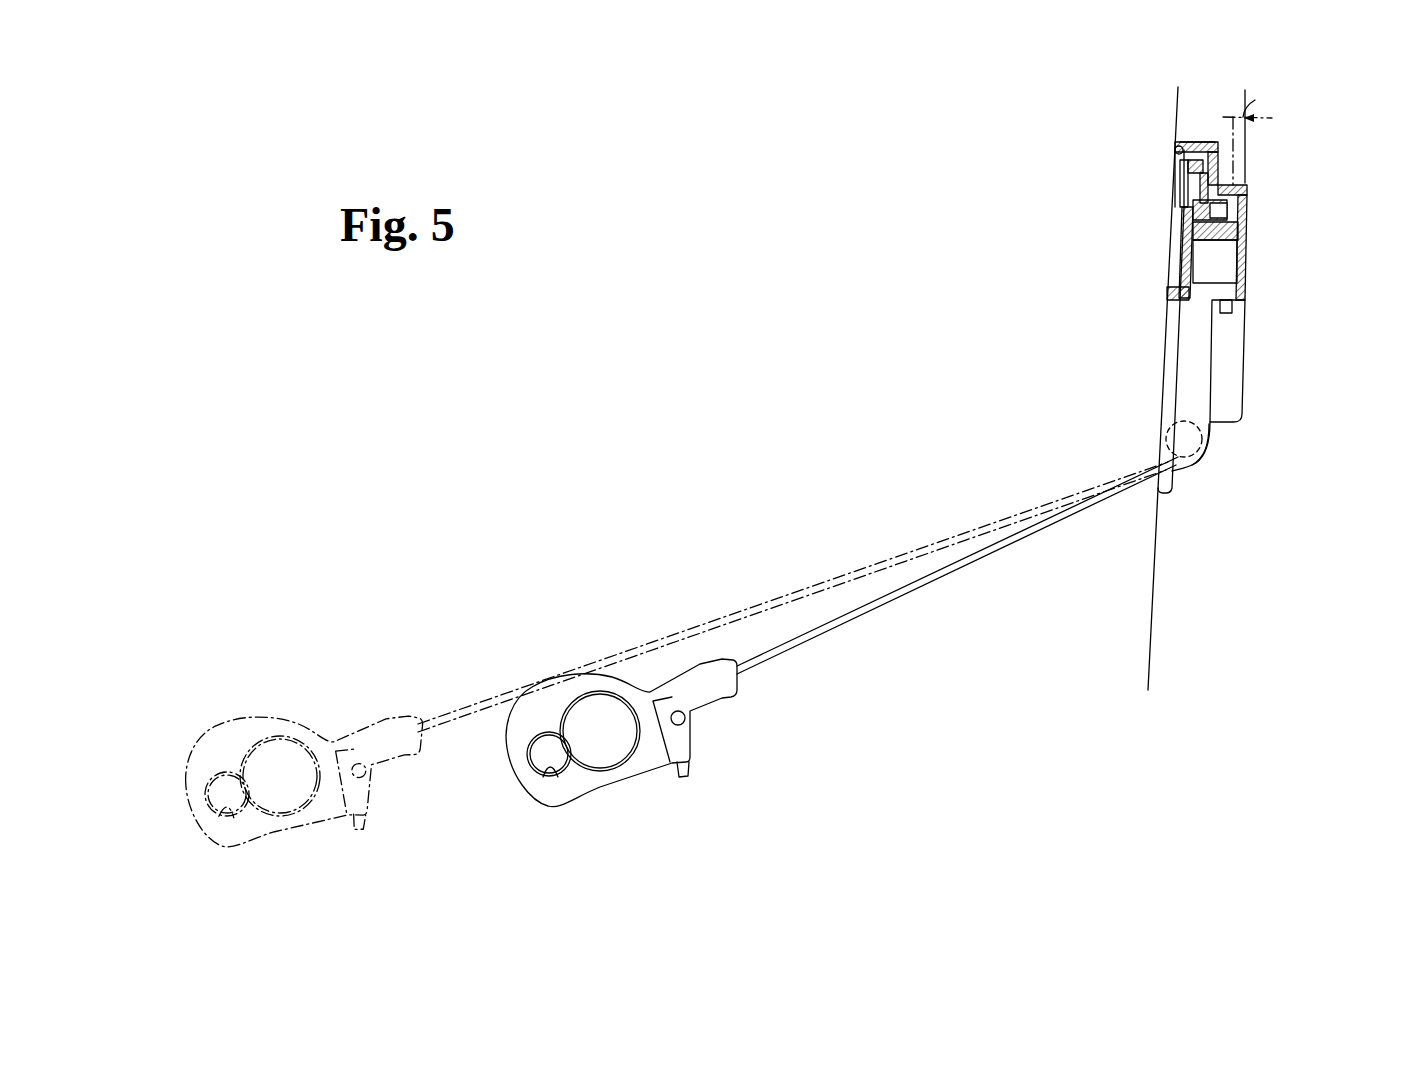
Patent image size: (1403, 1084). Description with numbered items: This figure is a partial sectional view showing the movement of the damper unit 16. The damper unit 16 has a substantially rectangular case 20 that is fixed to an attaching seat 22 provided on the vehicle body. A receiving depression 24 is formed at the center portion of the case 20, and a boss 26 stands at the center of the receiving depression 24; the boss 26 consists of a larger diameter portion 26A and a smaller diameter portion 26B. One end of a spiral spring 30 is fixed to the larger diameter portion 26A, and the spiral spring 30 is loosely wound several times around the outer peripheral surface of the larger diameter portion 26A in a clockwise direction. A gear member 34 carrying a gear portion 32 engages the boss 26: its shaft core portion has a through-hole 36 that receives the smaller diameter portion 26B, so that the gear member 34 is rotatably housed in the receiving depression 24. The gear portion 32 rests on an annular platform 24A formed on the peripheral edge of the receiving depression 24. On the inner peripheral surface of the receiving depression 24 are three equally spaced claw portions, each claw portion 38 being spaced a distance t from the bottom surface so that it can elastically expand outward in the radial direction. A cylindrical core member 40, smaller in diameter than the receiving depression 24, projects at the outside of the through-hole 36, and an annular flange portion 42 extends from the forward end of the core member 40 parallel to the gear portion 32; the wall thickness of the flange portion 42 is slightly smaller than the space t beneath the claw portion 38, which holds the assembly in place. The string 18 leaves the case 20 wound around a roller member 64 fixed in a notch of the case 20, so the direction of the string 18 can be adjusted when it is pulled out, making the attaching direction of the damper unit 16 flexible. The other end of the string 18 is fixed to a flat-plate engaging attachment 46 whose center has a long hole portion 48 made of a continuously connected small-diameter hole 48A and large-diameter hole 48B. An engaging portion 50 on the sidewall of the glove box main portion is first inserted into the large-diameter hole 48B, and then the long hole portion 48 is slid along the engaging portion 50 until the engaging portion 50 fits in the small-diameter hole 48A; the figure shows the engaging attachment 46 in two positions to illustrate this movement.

The damper unit 16 is at (1166, 378).
The string 18 is at (830, 615).
The case 20 is at (1247, 367).
The attaching seat 22 is at (1158, 592).
The receiving depression 24 is at (1175, 125).
The annular platform 24A is at (1200, 139).
The boss 26 is at (1091, 321).
The larger diameter portion 26A is at (1195, 332).
The smaller diameter portion 26B is at (1182, 290).
The spiral spring 30 is at (1245, 275).
The gear portion 32 is at (1187, 166).
The gear member 34 is at (1174, 232).
The through-hole 36 is at (1180, 297).
The claw portion 38 is at (1175, 207).
The core member 40 is at (1218, 242).
The flange portion 42 is at (1248, 203).
The engaging attachment 46 is at (652, 691).
The long hole portion 48 is at (426, 819).
The small-diameter hole 48A is at (384, 817).
The large-diameter hole 48B is at (612, 748).
The engaging portion 50 is at (550, 753).
The roller member 64 is at (1197, 468).